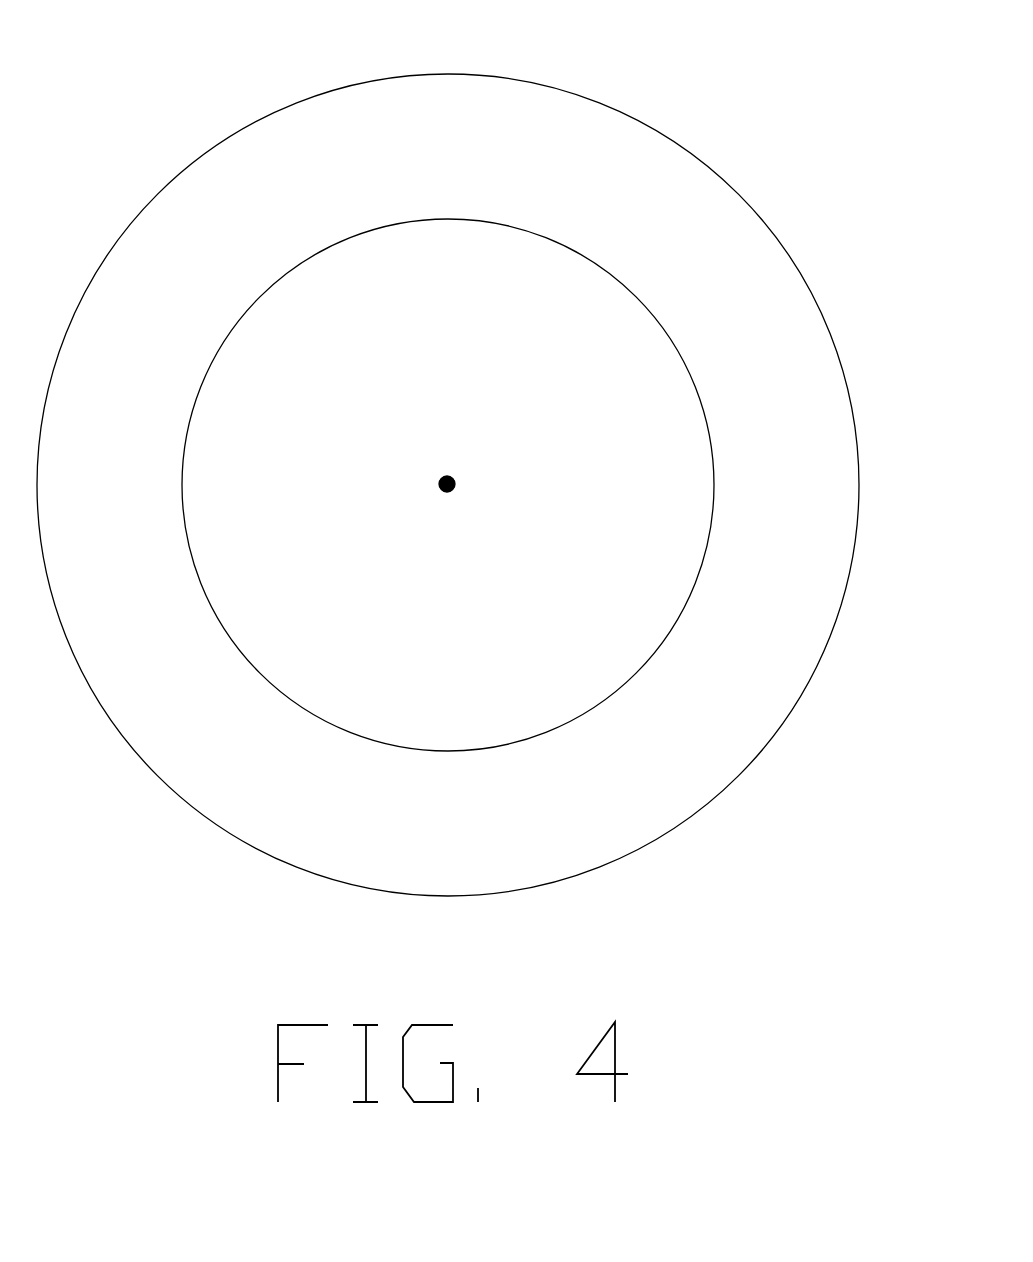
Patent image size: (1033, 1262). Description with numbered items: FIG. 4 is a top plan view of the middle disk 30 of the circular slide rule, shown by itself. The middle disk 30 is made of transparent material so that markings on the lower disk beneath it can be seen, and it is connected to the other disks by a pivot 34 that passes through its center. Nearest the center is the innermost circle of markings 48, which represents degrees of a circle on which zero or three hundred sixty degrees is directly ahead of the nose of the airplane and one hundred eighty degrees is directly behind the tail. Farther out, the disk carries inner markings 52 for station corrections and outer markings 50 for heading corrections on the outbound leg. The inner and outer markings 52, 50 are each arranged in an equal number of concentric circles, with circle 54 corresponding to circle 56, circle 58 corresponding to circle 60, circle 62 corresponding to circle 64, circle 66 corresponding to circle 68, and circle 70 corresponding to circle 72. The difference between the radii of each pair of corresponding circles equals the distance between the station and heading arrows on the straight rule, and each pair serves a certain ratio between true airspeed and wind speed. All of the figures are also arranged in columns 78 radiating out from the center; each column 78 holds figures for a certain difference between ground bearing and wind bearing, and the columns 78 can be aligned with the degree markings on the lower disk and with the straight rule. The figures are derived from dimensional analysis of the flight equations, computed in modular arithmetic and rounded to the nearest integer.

The middle disk 30 is at (783, 243).
The pivot 34 is at (443, 480).
The innermost circle of markings 48 is at (588, 458).
The outer markings 50 is at (132, 473).
The inner markings 52 is at (252, 445).
The circle 54 is at (290, 507).
The circle 56 is at (172, 530).
The circle 58 is at (305, 560).
The circle 60 is at (167, 582).
The circle 62 is at (312, 585).
The circle 64 is at (170, 645).
The circle 66 is at (293, 624).
The circle 68 is at (222, 740).
The circle 70 is at (325, 698).
The circle 72 is at (248, 800).
The columns 78 is at (314, 126).